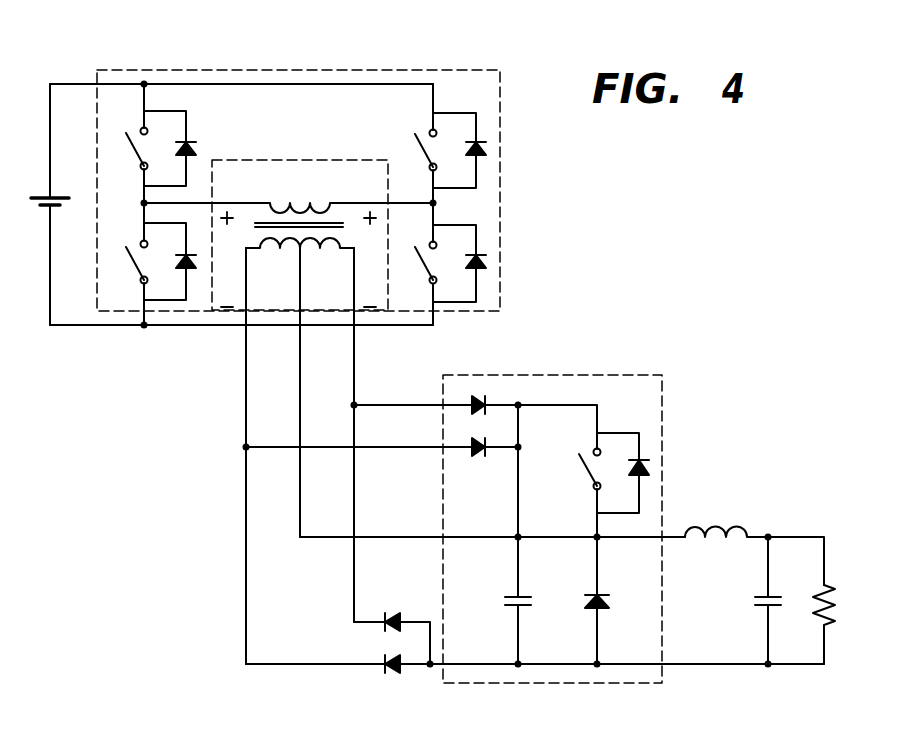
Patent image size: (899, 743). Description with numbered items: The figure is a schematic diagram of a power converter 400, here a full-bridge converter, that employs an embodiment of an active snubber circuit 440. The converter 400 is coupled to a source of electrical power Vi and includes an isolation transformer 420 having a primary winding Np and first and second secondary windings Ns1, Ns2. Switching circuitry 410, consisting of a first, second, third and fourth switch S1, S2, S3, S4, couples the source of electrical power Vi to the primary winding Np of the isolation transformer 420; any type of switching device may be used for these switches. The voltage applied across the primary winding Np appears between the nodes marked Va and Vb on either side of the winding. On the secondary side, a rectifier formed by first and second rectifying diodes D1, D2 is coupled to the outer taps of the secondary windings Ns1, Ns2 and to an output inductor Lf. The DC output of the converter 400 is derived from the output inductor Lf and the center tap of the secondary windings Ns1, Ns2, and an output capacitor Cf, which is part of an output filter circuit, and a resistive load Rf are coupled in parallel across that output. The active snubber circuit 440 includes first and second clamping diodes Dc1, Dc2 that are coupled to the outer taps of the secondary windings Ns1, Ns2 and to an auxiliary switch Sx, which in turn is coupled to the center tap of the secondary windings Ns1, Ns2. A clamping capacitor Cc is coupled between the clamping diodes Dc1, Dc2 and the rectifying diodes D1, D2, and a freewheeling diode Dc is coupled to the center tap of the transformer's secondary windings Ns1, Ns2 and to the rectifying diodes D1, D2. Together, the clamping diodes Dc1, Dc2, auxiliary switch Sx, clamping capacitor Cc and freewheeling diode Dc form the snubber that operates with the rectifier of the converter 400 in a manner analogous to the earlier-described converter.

The power converter 400 is at (602, 231).
The switching circuitry 410 is at (177, 68).
The isolation transformer 420 is at (277, 201).
The active snubber circuit 440 is at (613, 373).
The source of electrical power Vi is at (42, 204).
The first switch S1 is at (124, 155).
The second switch S2 is at (124, 270).
The third switch S3 is at (407, 143).
The fourth switch S4 is at (410, 266).
The primary winding Np is at (288, 188).
The first secondary winding Ns1 is at (273, 451).
The second secondary winding Ns2 is at (327, 430).
The primary voltage node a Va is at (228, 259).
The primary voltage node b Vb is at (374, 259).
The first clamping diode Dc1 is at (488, 401).
The second clamping diode Dc2 is at (480, 455).
The auxiliary switch Sx is at (572, 477).
The clamping capacitor Cc is at (507, 599).
The freewheeling diode Dc is at (592, 605).
The first rectifying diode D1 is at (392, 612).
The second rectifying diode D2 is at (388, 652).
The output inductor Lf is at (717, 527).
The output capacitor Cf is at (757, 603).
The resistive load Rf is at (817, 597).